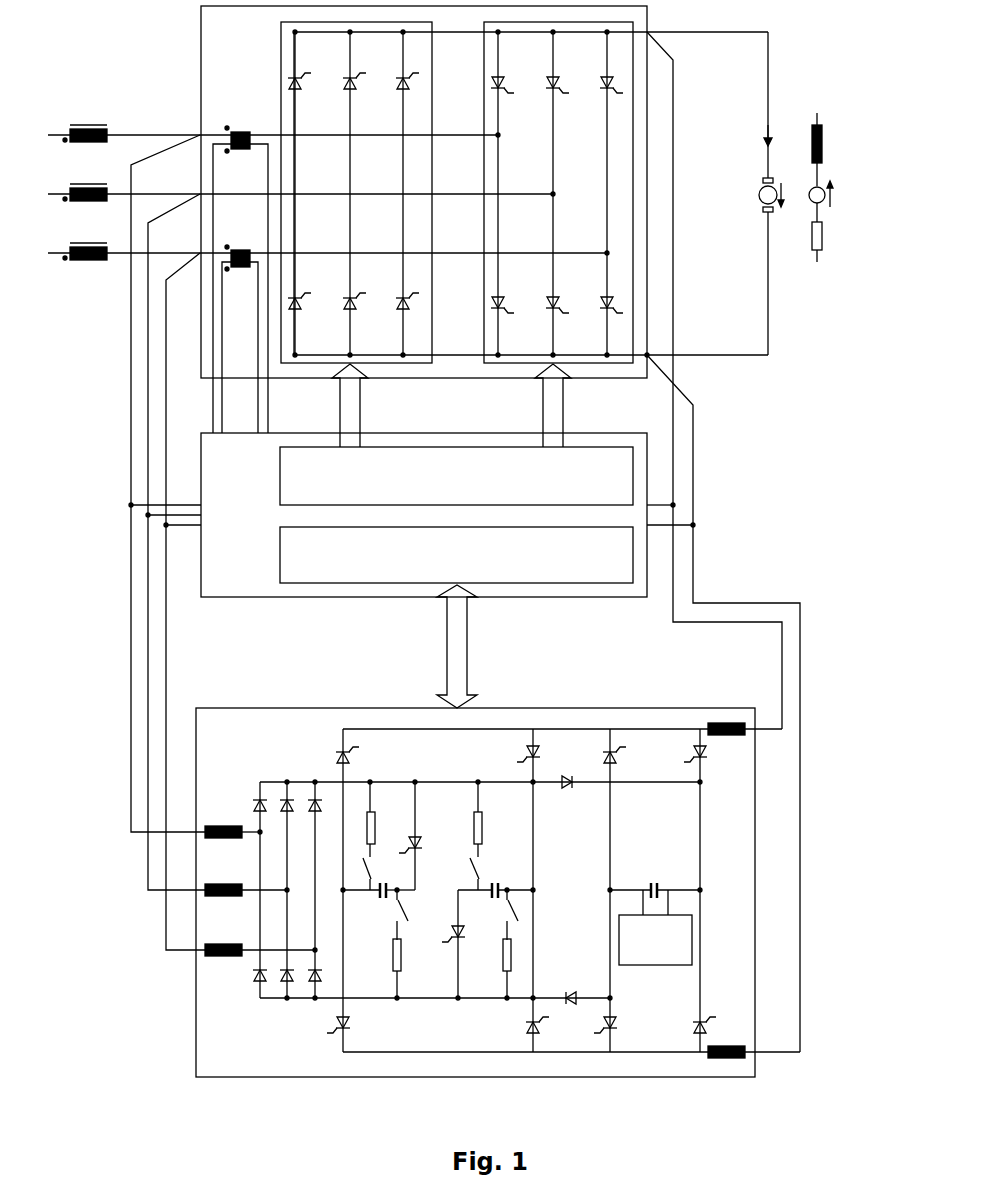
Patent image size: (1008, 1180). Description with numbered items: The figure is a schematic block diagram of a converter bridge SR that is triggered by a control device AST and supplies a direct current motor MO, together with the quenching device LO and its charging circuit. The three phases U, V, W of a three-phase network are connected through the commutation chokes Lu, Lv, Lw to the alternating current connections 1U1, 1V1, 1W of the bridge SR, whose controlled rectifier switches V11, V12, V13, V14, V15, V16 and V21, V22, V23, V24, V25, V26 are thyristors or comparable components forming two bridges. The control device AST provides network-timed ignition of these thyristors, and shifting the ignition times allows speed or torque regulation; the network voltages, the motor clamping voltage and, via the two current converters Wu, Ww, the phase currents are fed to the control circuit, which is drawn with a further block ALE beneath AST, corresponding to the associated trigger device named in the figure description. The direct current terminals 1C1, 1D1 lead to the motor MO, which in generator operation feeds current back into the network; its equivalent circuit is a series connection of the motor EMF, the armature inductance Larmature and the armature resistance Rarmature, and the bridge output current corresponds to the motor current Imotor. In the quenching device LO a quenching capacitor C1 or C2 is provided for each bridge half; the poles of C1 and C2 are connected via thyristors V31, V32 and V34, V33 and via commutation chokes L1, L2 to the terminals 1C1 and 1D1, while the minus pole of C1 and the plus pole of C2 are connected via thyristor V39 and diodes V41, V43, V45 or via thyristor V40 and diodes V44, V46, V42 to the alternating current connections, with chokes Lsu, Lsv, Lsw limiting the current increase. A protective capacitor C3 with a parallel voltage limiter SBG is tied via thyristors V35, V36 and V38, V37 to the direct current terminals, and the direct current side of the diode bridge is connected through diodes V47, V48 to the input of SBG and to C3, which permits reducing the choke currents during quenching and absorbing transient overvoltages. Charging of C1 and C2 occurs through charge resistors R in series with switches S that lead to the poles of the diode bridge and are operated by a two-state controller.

The converter bridge SR is at (424, 192).
The quenching device LO is at (475, 892).
The control device AST is at (456, 476).
The evaluation/control logic unit ALE is at (456, 555).
The direct current motor MO is at (746, 193).
The phase U is at (265, 136).
The phase V is at (292, 195).
The phase W is at (318, 254).
The commutation choke Lu is at (85, 145).
The commutation choke Lv is at (85, 204).
The commutation choke Lw is at (85, 263).
The alternating current connection 1U1 is at (194, 470).
The alternating current connection 1V1 is at (216, 529).
The alternating current connection 1W is at (237, 588).
The current converter Wu is at (240, 268).
The current converter Ww is at (240, 327).
The direct current terminal 1C1 is at (714, 367).
The direct current terminal 1D1 is at (650, 353).
The controlled rectifier switch V11 is at (314, 67).
The controlled rectifier switch V12 is at (422, 313).
The controlled rectifier switch V13 is at (369, 67).
The controlled rectifier switch V14 is at (313, 313).
The controlled rectifier switch V15 is at (422, 67).
The controlled rectifier switch V16 is at (368, 313).
The controlled rectifier switch V21 is at (514, 294).
The controlled rectifier switch V22 is at (624, 75).
The controlled rectifier switch V23 is at (569, 294).
The controlled rectifier switch V24 is at (514, 75).
The controlled rectifier switch V25 is at (624, 294).
The controlled rectifier switch V26 is at (569, 75).
The quenching thyristor V31 is at (364, 753).
The quenching thyristor V32 is at (359, 1024).
The quenching thyristor V33 is at (518, 1024).
The quenching thyristor V34 is at (515, 890).
The thyristor V35 is at (629, 890).
The thyristor V36 is at (623, 1024).
The thyristor V37 is at (688, 1019).
The thyristor V38 is at (681, 890).
The thyristor V39 is at (431, 836).
The thyristor V40 is at (439, 944).
The diode V41 is at (254, 800).
The diode V42 is at (313, 985).
The diode V43 is at (283, 800).
The diode V44 is at (257, 985).
The diode V45 is at (312, 800).
The diode V46 is at (285, 985).
The diode V47 is at (565, 794).
The diode V48 is at (570, 985).
The choke Lsu is at (223, 820).
The choke Lsv is at (223, 878).
The choke Lsw is at (224, 938).
The commutation choke L1 is at (745, 741).
The commutation choke L2 is at (754, 1039).
The quenching capacitor C1 is at (379, 903).
The quenching capacitor C2 is at (495, 882).
The protective capacitor C3 is at (655, 885).
The charge resistor R is at (430, 890).
The switch S is at (438, 889).
The voltage limiter SBG is at (655, 927).
The motor current Imotor is at (742, 138).
The armature inductance Larmature is at (852, 149).
The armature resistance Rarmature is at (852, 232).
The motor EMF is at (845, 195).